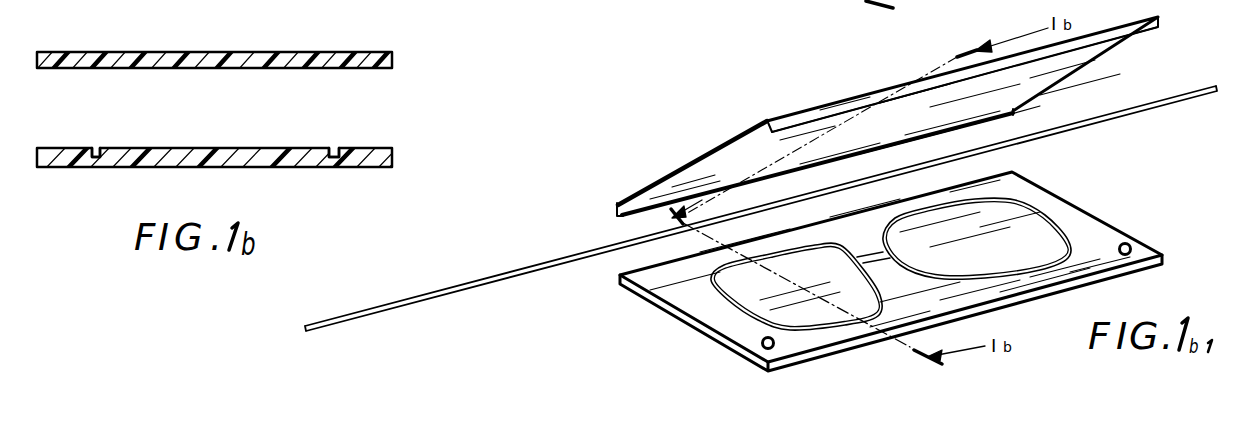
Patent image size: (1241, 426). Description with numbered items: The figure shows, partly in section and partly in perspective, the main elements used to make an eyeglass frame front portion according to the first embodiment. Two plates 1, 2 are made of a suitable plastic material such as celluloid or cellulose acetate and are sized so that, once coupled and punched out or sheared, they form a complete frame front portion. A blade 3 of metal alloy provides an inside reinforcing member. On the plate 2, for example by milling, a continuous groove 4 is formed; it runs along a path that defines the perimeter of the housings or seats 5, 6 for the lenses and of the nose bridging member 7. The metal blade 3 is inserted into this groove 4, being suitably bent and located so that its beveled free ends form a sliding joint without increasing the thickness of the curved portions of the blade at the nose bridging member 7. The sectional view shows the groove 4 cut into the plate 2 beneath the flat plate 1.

In FIG. 1B, the plate 1 is at (392, 55).
In FIG. 1B1, the plate 1 is at (806, 111).
In FIG. 1B, the plate 2 is at (392, 160).
In FIG. 1B1, the plate 2 is at (1025, 188).
In FIG. 1B1, the blade 3 is at (478, 276).
In FIG. 1B, the groove 4 is at (334, 148).
In FIG. 1B1, the groove 4 is at (693, 313).
In FIG. 1B1, the housing or seat 5 is at (717, 335).
In FIG. 1B1, the housing or seat 6 is at (1068, 232).
In FIG. 1B1, the nose bridging member 7 is at (879, 259).